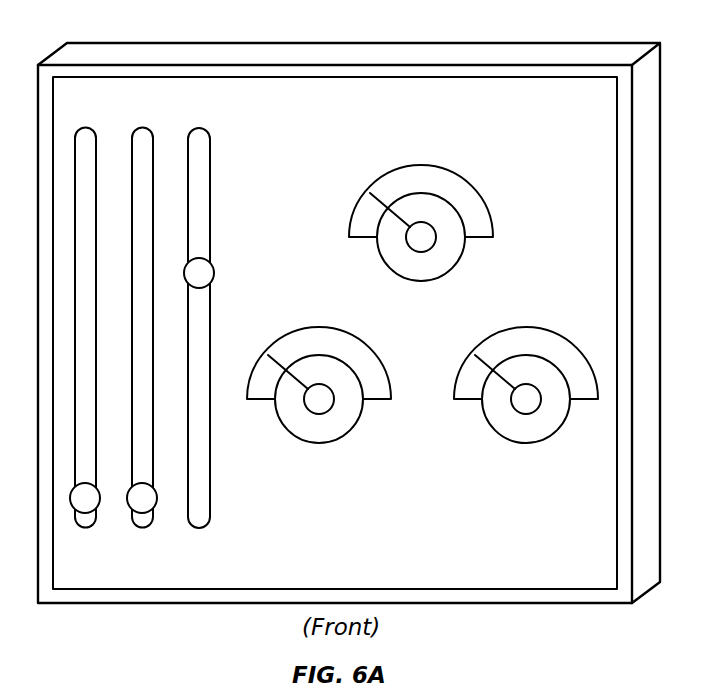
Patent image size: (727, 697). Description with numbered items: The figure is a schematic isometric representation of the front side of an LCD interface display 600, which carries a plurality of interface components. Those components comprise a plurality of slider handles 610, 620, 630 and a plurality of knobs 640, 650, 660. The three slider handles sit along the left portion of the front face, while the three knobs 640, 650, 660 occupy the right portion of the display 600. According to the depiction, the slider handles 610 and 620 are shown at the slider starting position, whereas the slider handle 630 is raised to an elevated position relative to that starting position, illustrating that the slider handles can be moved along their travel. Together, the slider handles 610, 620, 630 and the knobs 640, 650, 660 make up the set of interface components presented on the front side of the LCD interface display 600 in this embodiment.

The LCD interface display 600 is at (510, 63).
The slider handle 610 is at (99, 501).
The slider handle 620 is at (156, 501).
The slider handle 630 is at (214, 273).
The knob 640 is at (319, 414).
The knob 650 is at (421, 252).
The knob 660 is at (526, 414).